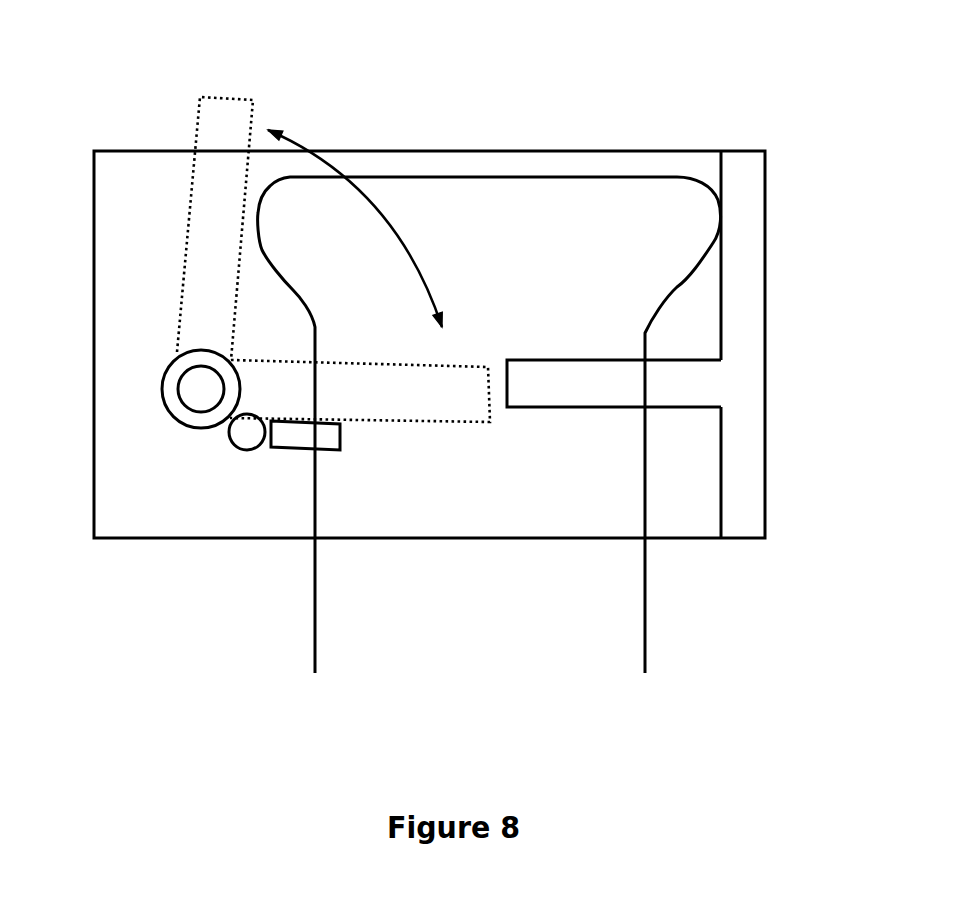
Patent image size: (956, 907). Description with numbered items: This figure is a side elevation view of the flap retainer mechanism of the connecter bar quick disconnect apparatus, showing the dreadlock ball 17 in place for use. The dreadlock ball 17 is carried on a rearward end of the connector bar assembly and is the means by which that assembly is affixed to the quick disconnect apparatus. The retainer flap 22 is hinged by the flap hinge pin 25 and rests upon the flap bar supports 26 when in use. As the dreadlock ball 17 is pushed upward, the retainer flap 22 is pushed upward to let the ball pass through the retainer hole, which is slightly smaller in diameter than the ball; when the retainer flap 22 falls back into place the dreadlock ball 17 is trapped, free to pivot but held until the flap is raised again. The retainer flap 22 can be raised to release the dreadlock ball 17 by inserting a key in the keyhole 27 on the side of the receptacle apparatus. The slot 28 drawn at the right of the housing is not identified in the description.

The dreadlock ball 17 is at (492, 227).
The retainer flap 22 is at (260, 71).
The flap hinge pin 25 is at (195, 406).
The flap bar supports 26 is at (338, 449).
The keyhole 27 is at (247, 452).
The slot 28 is at (685, 366).